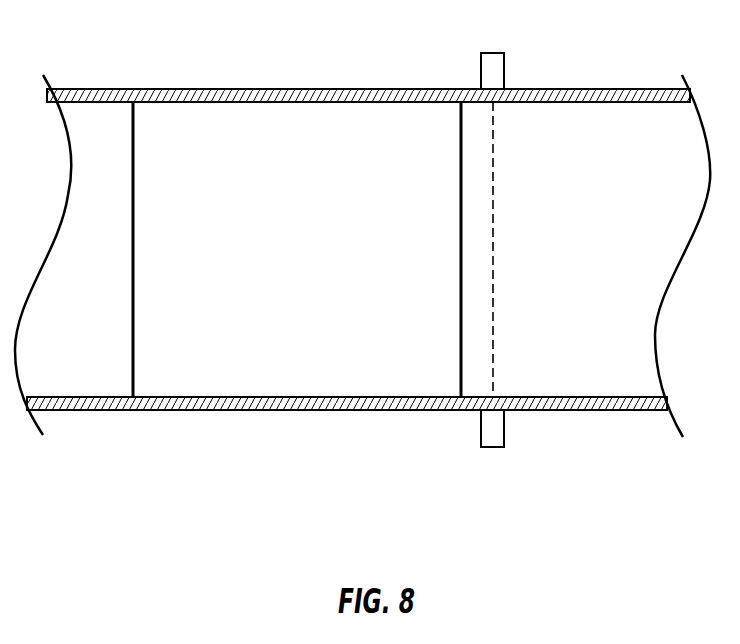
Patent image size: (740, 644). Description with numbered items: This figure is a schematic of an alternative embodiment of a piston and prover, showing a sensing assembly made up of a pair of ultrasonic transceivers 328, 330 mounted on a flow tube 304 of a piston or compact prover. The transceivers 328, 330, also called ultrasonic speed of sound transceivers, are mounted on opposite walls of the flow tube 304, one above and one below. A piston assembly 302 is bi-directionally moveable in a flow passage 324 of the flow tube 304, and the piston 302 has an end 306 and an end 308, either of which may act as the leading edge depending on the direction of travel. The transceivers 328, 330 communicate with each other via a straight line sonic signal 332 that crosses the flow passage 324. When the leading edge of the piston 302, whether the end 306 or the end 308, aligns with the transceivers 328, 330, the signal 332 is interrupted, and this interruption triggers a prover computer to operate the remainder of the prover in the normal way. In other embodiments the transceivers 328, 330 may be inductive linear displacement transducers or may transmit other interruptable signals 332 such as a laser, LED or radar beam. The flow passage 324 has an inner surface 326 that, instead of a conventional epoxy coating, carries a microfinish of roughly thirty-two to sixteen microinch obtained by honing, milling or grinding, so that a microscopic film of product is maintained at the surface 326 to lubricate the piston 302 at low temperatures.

The piston assembly 302 is at (327, 265).
The flow tube 304 is at (168, 89).
The end of piston 306 is at (461, 247).
The end of piston 308 is at (133, 296).
The flow passage 324 is at (102, 265).
The inner surface 326 is at (657, 397).
The ultrasonic transceiver 328 is at (489, 53).
The ultrasonic transceiver 330 is at (490, 447).
The straight line sonic signal 332 is at (493, 188).